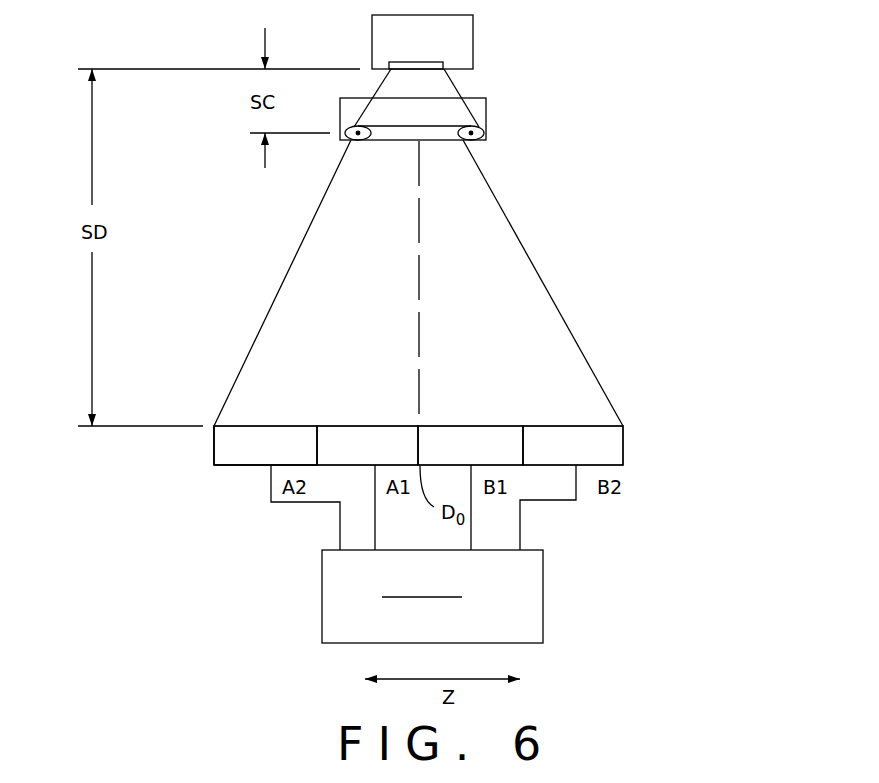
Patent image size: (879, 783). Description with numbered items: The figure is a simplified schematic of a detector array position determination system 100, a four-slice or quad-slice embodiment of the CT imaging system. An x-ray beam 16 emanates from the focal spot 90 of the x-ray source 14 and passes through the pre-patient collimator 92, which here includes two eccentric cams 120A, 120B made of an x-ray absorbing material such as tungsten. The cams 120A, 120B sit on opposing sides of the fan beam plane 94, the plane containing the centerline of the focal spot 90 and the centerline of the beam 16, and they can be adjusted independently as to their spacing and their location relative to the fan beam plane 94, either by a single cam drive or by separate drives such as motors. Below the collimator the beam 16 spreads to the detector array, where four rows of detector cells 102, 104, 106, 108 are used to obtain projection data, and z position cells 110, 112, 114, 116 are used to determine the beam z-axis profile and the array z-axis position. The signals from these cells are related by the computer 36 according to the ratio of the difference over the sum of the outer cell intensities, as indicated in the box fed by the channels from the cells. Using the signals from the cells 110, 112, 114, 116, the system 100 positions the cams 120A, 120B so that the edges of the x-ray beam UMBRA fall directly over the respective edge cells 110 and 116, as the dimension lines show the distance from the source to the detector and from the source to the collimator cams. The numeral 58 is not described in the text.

The x-ray source 14 is at (478, 26).
The focal spot 90 is at (392, 64).
The pre-patient collimator 92 is at (487, 104).
The eccentric cam 120A is at (348, 145).
The eccentric cam 120B is at (485, 134).
The x-ray beam 16 is at (288, 288).
The x-ray beam umbra UMBRA is at (552, 296).
The fan beam plane 94 is at (421, 312).
The detector array position determination system 100 is at (668, 238).
The row of detector cells 108 is at (625, 442).
The detector array left end 58 is at (190, 438).
The row of detector cells 102 is at (212, 450).
The z position cell 110 is at (241, 467).
The z position cell 112 is at (383, 426).
The z position cell 114 is at (468, 426).
The z position cell 116 is at (623, 465).
The row of detector cells 104 is at (352, 467).
The row of detector cells 106 is at (510, 467).
The computer 36 is at (545, 620).